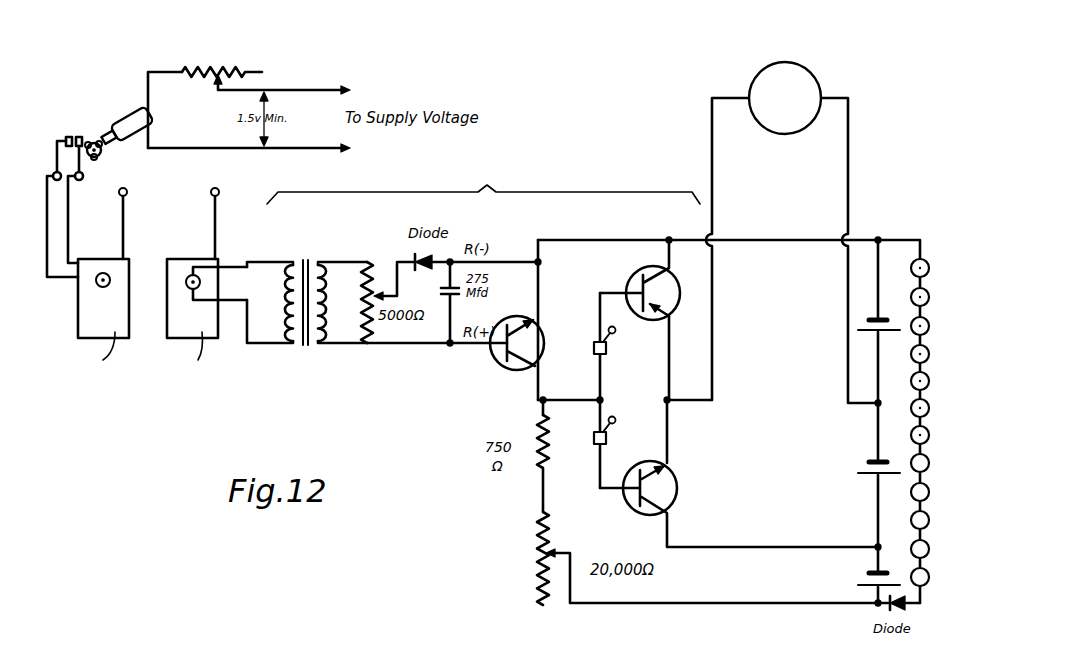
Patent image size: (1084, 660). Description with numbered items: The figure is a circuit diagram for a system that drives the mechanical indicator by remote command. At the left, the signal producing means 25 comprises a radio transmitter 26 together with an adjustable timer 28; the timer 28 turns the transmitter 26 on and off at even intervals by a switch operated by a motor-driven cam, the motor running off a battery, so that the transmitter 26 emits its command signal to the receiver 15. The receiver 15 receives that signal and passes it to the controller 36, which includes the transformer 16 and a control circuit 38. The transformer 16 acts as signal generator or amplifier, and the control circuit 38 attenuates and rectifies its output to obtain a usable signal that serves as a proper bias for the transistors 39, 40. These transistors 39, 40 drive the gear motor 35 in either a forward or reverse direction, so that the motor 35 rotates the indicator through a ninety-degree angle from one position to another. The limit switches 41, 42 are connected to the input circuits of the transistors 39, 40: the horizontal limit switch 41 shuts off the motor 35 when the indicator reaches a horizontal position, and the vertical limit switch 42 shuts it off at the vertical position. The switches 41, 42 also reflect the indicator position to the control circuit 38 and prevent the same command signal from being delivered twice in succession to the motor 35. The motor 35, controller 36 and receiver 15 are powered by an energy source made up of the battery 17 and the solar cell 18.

The adjustable timer 28 is at (136, 97).
The signal producing means 25 is at (140, 234).
The radio transmitter 26 is at (129, 280).
The receiver 15 is at (172, 322).
The transformer 16 is at (318, 347).
The controller 36 is at (483, 176).
The control circuit 38 is at (530, 221).
The transistor 39 is at (680, 305).
The transistor 40 is at (673, 487).
The horizontal limit switch 41 is at (586, 346).
The vertical limit switch 42 is at (586, 441).
The gear motor 35 is at (783, 62).
The battery 17 is at (886, 228).
The solar cell 18 is at (936, 488).